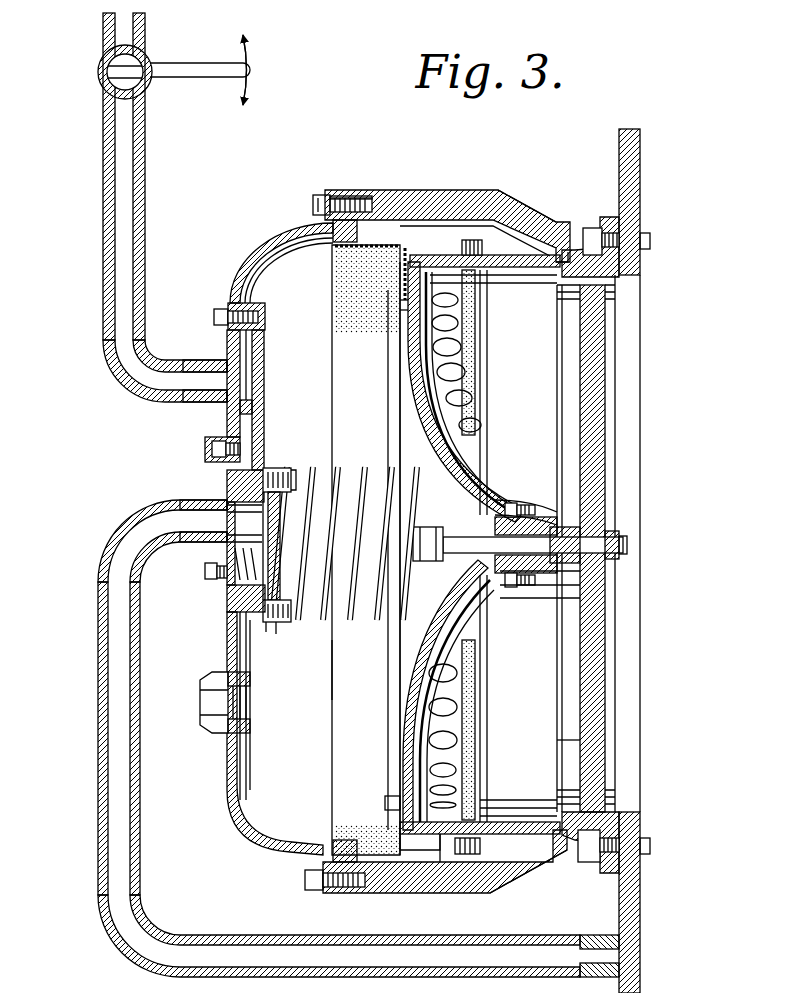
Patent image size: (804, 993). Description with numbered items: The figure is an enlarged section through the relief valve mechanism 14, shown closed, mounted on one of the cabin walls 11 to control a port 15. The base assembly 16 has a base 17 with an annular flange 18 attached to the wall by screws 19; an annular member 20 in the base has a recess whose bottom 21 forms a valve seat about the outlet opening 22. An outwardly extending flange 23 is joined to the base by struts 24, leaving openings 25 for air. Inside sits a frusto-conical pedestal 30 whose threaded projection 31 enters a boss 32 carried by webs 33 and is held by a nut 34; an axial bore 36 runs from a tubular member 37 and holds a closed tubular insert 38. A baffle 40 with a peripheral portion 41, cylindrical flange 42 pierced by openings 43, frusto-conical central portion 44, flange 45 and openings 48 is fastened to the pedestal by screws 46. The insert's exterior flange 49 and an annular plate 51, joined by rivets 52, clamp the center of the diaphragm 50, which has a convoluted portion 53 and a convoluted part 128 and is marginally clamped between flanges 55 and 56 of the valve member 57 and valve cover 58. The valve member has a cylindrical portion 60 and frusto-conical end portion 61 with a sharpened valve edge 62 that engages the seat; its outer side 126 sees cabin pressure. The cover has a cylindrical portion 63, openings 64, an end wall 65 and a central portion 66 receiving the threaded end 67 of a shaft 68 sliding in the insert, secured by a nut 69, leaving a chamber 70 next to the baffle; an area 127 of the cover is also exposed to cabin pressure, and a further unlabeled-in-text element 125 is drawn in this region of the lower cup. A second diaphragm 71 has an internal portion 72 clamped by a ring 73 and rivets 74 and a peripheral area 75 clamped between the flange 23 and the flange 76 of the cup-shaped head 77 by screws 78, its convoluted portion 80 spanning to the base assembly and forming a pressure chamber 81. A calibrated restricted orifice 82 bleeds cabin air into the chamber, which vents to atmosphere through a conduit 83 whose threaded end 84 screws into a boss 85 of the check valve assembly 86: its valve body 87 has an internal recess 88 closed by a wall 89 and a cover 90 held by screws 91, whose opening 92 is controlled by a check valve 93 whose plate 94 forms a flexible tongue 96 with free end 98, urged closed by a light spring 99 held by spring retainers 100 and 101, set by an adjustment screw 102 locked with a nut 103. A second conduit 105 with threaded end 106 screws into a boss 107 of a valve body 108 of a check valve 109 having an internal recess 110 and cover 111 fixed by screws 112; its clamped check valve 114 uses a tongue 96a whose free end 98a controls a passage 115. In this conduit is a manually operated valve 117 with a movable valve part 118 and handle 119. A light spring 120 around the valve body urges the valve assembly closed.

The walls 11 is at (642, 912).
The relief valve mechanism 14 is at (138, 470).
The port 15 is at (624, 628).
The base or body assembly 16 is at (522, 188).
The base 17 is at (590, 275).
The annular flange 18 is at (612, 228).
The screws 19 is at (650, 239).
The annular member 20 is at (562, 862).
The bottom 21 is at (552, 818).
The outlet opening 22 is at (575, 355).
The flange 23 is at (345, 222).
The struts 24 is at (490, 195).
The openings 25 is at (453, 225).
The pedestal 30 is at (545, 588).
The threaded projection 31 is at (560, 571).
The boss 32 is at (600, 540).
The webs 33 is at (596, 428).
The nut 34 is at (628, 546).
The axial bore 36 is at (595, 527).
The tubular member 37 is at (500, 514).
The tubular insert 38 is at (545, 512).
The baffle 40 is at (470, 419).
The peripheral portion 41 is at (438, 338).
The cylindrical flange 42 is at (465, 268).
The openings 43 is at (445, 362).
The central portion 44 is at (470, 470).
The flange 45 is at (545, 598).
The screws 46 is at (490, 590).
The openings 48 is at (490, 508).
The exterior flange 49 is at (484, 600).
The diaphragm 50 is at (467, 375).
The annular plate 51 is at (467, 612).
The rivets 52 is at (412, 600).
The convoluted portion 53 is at (492, 622).
The flange 55 is at (522, 864).
The flange 56 is at (460, 862).
The movable outflow valve member 57 is at (495, 814).
The valve cover 58 is at (418, 680).
The cylindrical portion 60 is at (520, 832).
The frusto-conical end portion 61 is at (560, 306).
The valve edge 62 is at (560, 758).
The cylindrical portion 63 is at (432, 862).
The openings 64 is at (436, 838).
The end wall or bottom 65 is at (403, 755).
The central portion 66 is at (440, 485).
The threaded end 67 is at (415, 537).
The shaft 68 is at (560, 525).
The nut 69 is at (388, 600).
The chamber 70 is at (405, 274).
The second diaphragm 71 is at (330, 328).
The internal portion 72 is at (398, 296).
The ring 73 is at (398, 306).
The rivets 74 is at (385, 803).
The peripheral area 75 is at (340, 196).
The flange 76 is at (318, 200).
The cup-shaped head 77 is at (238, 258).
The screws 78 is at (314, 210).
The convoluted portion 80 is at (372, 246).
The pressure chamber 81 is at (265, 808).
The calibrated restricted orifice 82 is at (200, 710).
The conduit 83 is at (98, 752).
The externally threaded end 84 is at (228, 500).
The boss 85 is at (236, 486).
The check valve assembly 86 is at (228, 591).
The valve body 87 is at (243, 602).
The internal recess 88 is at (248, 614).
The wall 89 is at (230, 570).
The cover 90 is at (268, 468).
The screws 91 is at (276, 646).
The opening 92 is at (278, 568).
The check valve 93 is at (266, 624).
The plate 94 is at (293, 482).
The flexible tongue 96 is at (262, 524).
The tongue 96a is at (264, 341).
The free end 98 is at (280, 574).
The free end 98a is at (252, 398).
The light spring 99 is at (246, 592).
The spring retainer 100 is at (286, 614).
The spring retainer 101 is at (228, 550).
The adjustment screw 102 is at (236, 583).
The nut 103 is at (217, 574).
The conduit 105 is at (112, 235).
The threaded end 106 is at (228, 400).
The boss 107 is at (228, 362).
The valve body 108 is at (240, 412).
The check valve 109 is at (228, 336).
The internal recess 110 is at (236, 316).
The cover 111 is at (265, 305).
The screws 112 is at (228, 306).
The check valve 114 is at (260, 300).
The passage 115 is at (266, 406).
The manually operated valve 117 is at (153, 58).
The movable valve part 118 is at (135, 88).
The handle 119 is at (205, 68).
The light spring 120 is at (335, 632).
The filter 125 is at (478, 750).
The outer side 126 is at (572, 261).
The area 127 is at (408, 258).
The convoluted part 128 is at (470, 282).